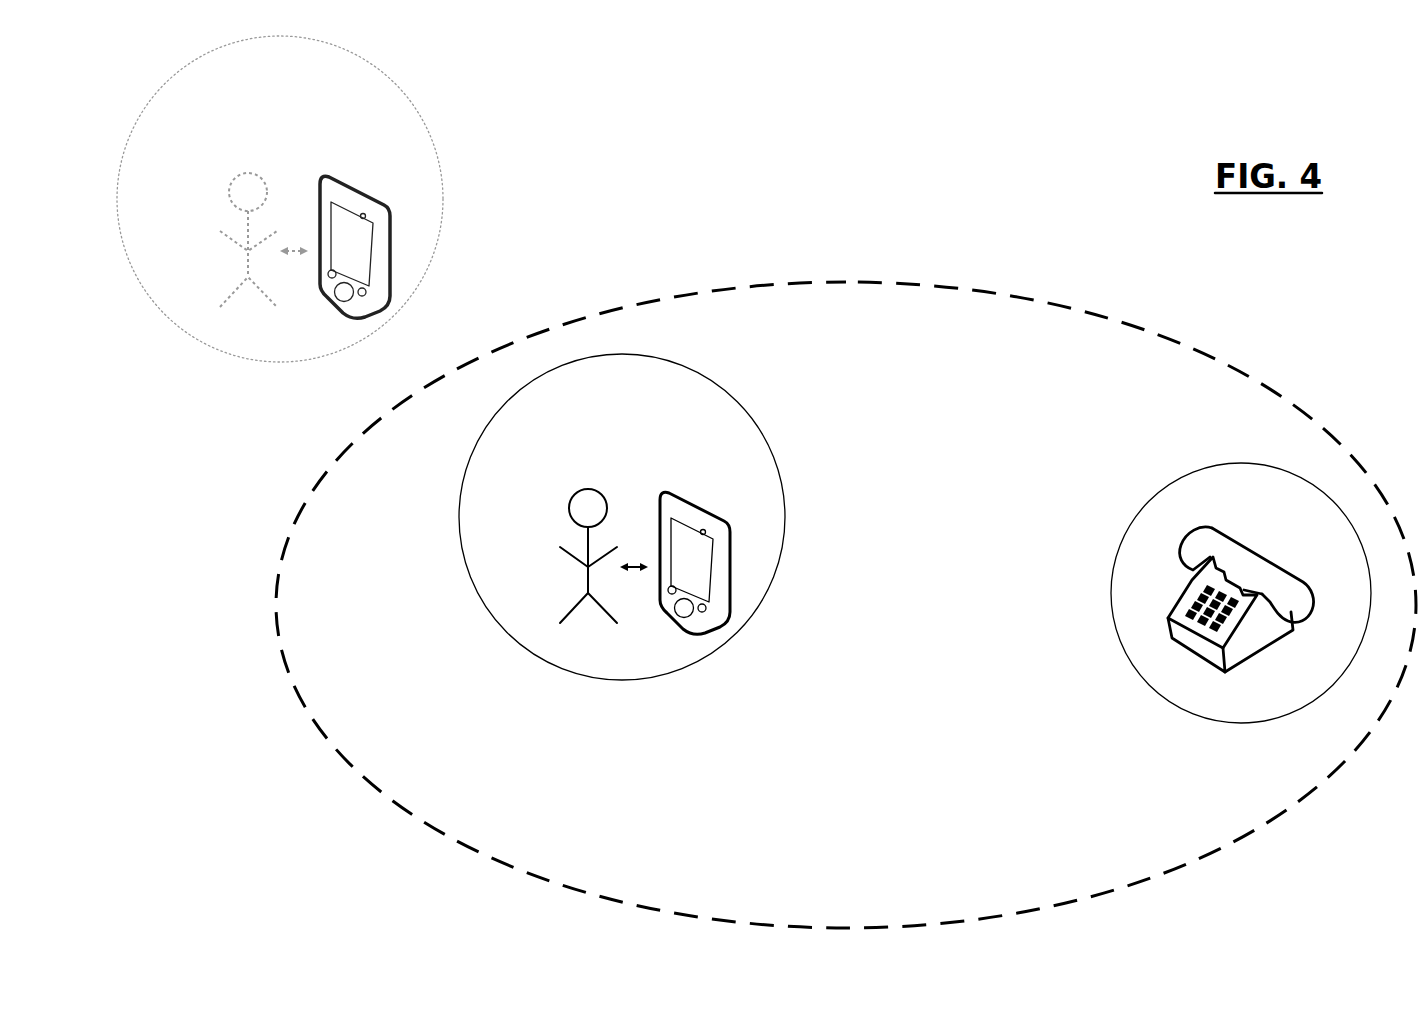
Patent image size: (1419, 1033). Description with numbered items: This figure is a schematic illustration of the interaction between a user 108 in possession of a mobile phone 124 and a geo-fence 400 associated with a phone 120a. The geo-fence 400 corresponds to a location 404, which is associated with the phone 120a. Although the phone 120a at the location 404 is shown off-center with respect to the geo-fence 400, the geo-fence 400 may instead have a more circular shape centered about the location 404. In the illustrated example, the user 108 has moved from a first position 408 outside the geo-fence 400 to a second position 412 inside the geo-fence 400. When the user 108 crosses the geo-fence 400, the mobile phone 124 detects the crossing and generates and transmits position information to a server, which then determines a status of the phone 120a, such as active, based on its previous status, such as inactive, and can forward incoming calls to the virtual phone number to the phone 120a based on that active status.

The geo-fence 400 is at (855, 270).
The location 404 is at (1113, 593).
The first position 408 is at (321, 199).
The second position 412 is at (622, 681).
The user 108 is at (554, 480).
The mobile phone 124 is at (708, 497).
The phone 120a is at (1257, 553).